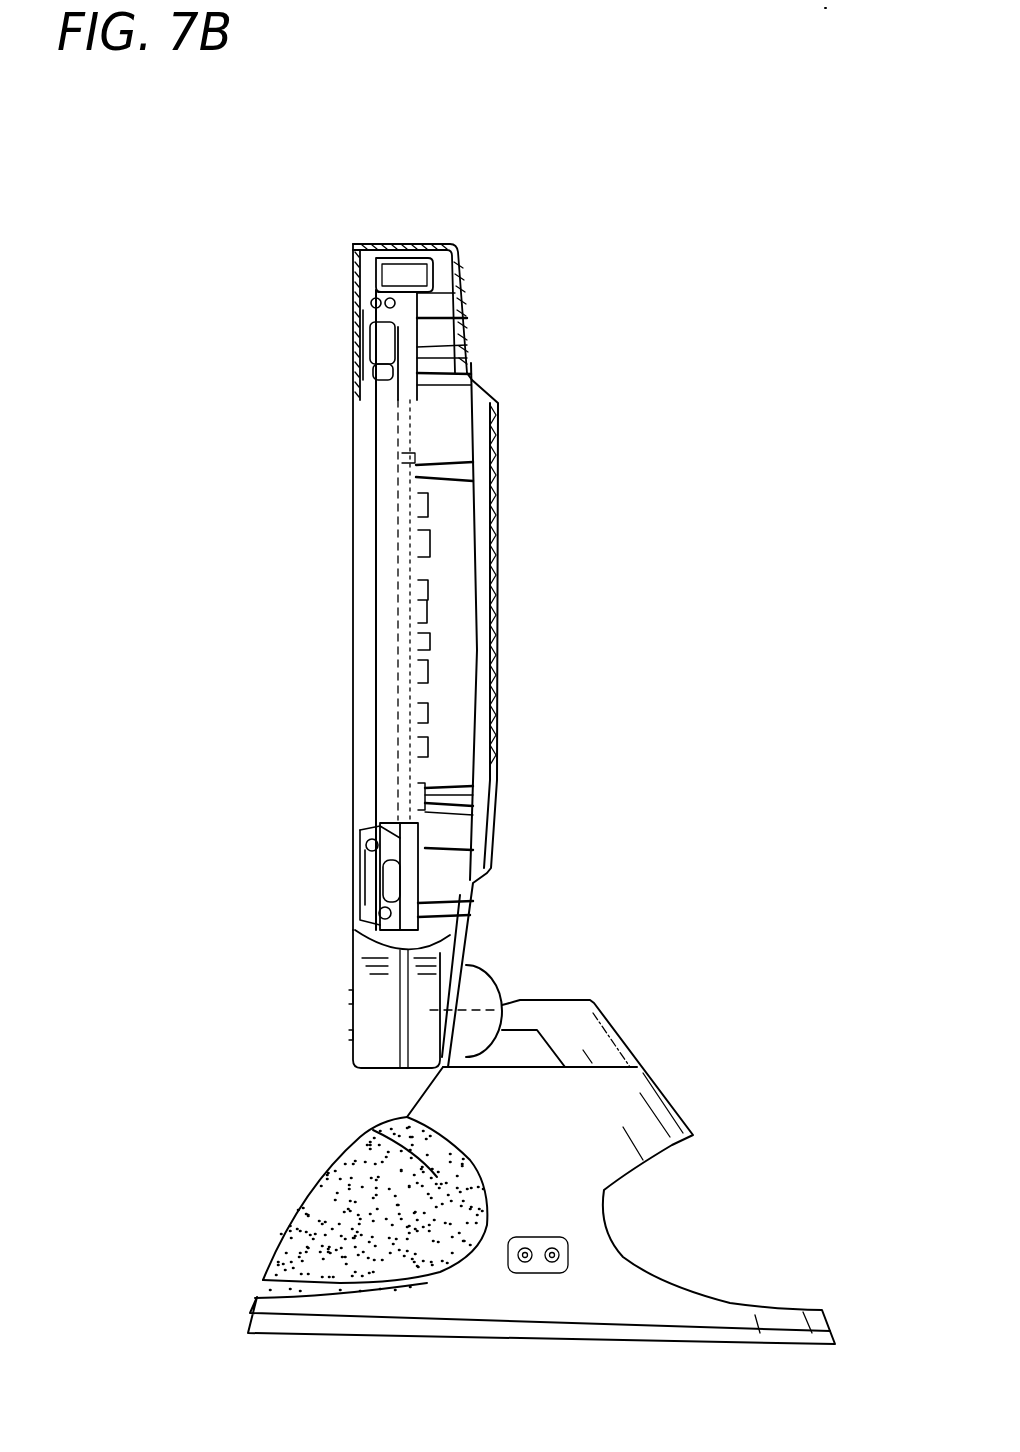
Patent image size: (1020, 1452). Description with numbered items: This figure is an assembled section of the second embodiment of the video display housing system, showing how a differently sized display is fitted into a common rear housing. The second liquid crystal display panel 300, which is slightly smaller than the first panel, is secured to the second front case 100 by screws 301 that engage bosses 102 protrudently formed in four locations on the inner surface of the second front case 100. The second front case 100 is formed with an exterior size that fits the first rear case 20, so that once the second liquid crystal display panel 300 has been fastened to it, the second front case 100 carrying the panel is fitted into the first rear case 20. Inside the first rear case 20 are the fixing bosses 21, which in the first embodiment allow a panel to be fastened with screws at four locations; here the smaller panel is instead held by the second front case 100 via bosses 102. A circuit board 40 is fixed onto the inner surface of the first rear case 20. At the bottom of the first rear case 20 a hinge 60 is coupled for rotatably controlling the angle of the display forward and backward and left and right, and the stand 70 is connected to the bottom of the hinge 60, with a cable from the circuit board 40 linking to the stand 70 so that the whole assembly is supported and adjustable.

The second front case 100 is at (353, 245).
The bosses 102 is at (352, 345).
The second liquid crystal display panel 300 is at (355, 503).
The screws 301 is at (390, 367).
The first rear case 20 is at (500, 666).
The fixing bosses 21 is at (467, 318).
The circuit board 40 is at (415, 547).
The hinge 60 is at (617, 1008).
The stand 70 is at (337, 1141).